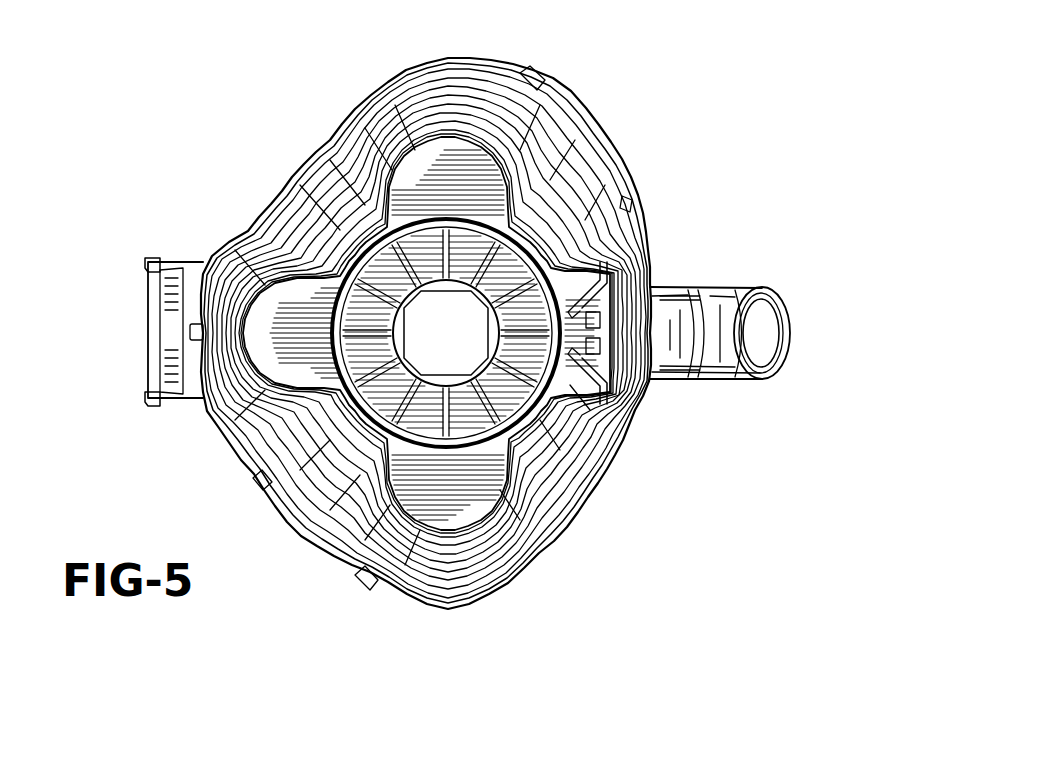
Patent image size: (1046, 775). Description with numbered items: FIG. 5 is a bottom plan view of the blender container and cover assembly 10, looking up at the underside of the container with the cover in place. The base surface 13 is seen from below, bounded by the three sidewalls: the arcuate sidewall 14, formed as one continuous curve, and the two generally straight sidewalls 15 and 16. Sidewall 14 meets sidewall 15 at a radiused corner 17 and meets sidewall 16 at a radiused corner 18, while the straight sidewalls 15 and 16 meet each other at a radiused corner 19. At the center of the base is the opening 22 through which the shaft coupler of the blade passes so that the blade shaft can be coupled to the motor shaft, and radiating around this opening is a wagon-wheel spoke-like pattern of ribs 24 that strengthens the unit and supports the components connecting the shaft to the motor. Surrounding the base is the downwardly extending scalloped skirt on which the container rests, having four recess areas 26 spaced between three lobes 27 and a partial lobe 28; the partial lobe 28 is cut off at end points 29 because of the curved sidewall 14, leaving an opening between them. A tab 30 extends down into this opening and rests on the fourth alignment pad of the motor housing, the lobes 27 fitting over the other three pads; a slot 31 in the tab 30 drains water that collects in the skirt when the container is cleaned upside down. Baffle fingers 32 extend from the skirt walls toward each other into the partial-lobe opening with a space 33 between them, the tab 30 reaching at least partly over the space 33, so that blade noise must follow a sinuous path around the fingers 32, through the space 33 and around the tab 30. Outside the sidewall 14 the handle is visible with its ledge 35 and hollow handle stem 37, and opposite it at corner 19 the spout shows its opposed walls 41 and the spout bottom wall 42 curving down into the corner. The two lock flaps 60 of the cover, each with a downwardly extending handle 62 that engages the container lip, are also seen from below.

The blender container and cover assembly 10 is at (157, 110).
The base surface 13 is at (250, 318).
The sidewall 14 is at (628, 205).
The sidewall 15 is at (300, 183).
The sidewall 16 is at (280, 455).
The radiused corner 17 is at (456, 80).
The radiused corner 18 is at (470, 592).
The radiused corner 19 is at (190, 328).
The opening 22 is at (433, 347).
The ribs 24 is at (378, 215).
The recess areas 26 is at (490, 188).
The lobes 27 is at (440, 132).
The partial lobe 28 is at (588, 312).
The end points 29 is at (598, 290).
The tab 30 is at (648, 290).
The slot 31 is at (656, 372).
The fingers 32 is at (602, 275).
The space 33 is at (580, 322).
The ledge 35 is at (706, 322).
The handle stem 37 is at (789, 340).
The opposed walls 41 is at (150, 262).
The spout bottom wall 42 is at (150, 290).
The lock flaps 60 is at (598, 126).
The handle 62 is at (560, 110).